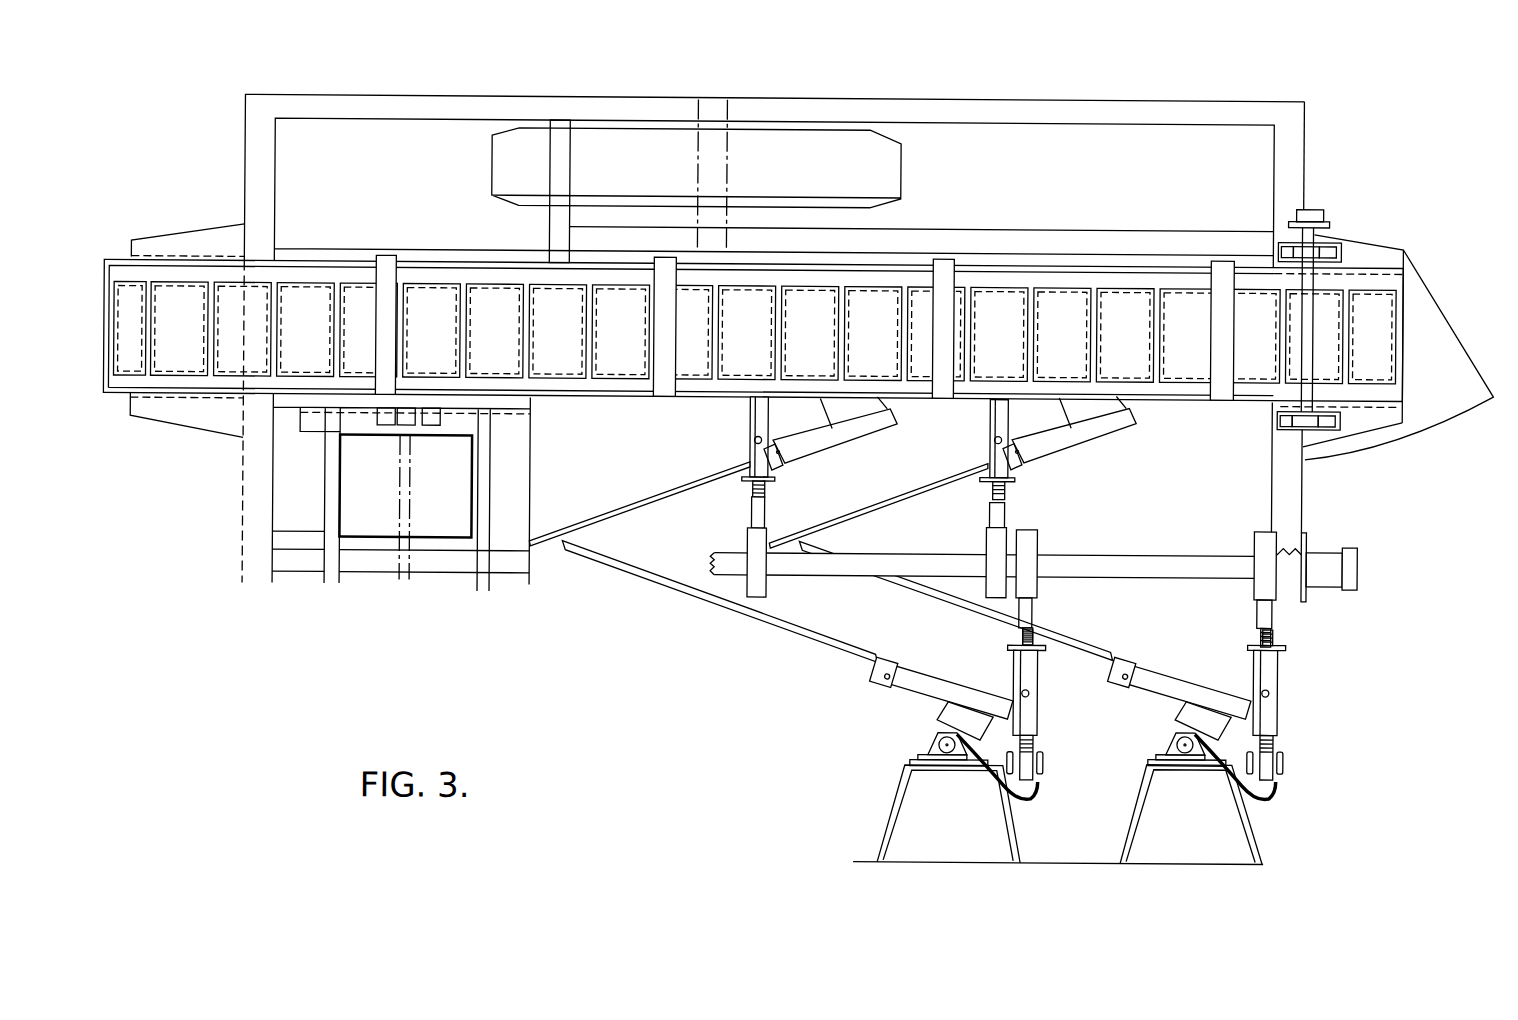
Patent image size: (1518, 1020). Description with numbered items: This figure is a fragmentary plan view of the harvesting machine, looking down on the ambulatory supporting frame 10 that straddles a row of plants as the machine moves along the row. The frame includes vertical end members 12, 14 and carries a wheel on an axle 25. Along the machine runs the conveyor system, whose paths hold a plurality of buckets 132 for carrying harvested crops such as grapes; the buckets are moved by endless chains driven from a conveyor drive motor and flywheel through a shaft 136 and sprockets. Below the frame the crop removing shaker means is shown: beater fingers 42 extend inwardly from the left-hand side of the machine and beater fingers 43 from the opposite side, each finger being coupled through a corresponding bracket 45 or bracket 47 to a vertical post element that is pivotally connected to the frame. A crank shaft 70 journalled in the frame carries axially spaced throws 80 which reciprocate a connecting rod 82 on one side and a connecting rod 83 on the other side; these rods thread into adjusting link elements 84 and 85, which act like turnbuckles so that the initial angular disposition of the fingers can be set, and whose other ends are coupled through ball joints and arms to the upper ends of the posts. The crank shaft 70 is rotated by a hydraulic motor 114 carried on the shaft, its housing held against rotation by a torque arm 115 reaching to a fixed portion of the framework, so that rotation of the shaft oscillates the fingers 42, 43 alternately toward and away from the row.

The ambulatory supporting frame 10 is at (1310, 159).
The vertical end member 12 is at (1305, 118).
The vertical end member 14 is at (253, 130).
The axle 25 is at (700, 112).
The fingers 42 is at (618, 507).
The fingers 43 is at (677, 588).
The bracket 45 is at (862, 441).
The bracket 47 is at (939, 668).
The crank shaft 70 is at (1169, 562).
The throws 80 is at (1040, 539).
The connecting rod 82 is at (757, 515).
The connecting rod 83 is at (1033, 608).
The adjusting link element 84 is at (757, 420).
The adjusting link element 85 is at (1040, 682).
The hydraulic motor 114 is at (1328, 575).
The torque arm 115 is at (1308, 534).
The bucket 132 is at (1140, 343).
The shaft 136 is at (1308, 321).